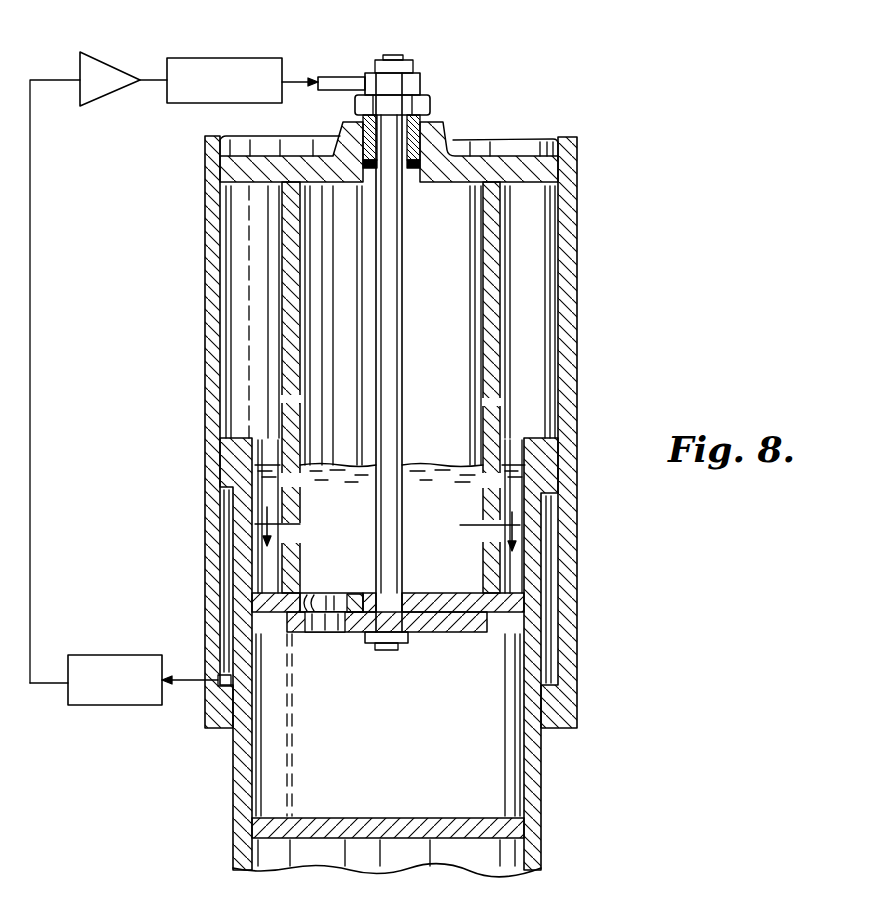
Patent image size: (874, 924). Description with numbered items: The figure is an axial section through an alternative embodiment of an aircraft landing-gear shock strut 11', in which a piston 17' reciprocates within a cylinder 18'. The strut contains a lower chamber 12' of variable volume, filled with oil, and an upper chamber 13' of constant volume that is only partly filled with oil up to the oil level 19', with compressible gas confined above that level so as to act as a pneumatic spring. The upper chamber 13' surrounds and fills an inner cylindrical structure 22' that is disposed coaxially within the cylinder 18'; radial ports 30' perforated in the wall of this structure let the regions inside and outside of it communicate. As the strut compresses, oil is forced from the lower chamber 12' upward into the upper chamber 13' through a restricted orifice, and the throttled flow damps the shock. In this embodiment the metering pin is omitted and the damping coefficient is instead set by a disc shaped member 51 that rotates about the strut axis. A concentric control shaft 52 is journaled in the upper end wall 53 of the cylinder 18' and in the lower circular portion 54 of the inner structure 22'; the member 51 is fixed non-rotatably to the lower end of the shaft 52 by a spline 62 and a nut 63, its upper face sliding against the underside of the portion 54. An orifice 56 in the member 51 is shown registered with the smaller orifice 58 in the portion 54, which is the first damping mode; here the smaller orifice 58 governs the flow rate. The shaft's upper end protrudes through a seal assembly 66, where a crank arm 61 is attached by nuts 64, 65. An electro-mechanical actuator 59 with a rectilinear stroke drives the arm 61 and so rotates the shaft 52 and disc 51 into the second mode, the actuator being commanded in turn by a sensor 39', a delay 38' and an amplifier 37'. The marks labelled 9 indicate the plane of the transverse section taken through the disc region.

The shock strut 11' is at (618, 240).
The lower chamber 12' is at (388, 725).
The upper chamber 13' is at (390, 389).
The piston 17' is at (365, 657).
The cylinder 18' is at (360, 432).
The oil level 19' is at (390, 452).
The inner cylindrical structure 22' is at (449, 387).
The radial ports 30' is at (399, 384).
The amplifier 37' is at (98, 353).
The delay 38' is at (96, 705).
The sensor 39' is at (193, 715).
The disc shaped member 51 is at (458, 632).
The control shaft 52 is at (402, 393).
The upper end wall 53 is at (462, 168).
The lower circular portion 54 is at (442, 594).
The orifice 56 is at (352, 633).
The orifice 58 is at (350, 596).
The electro-mechanical actuator 59 is at (226, 58).
The crank arm 61 is at (335, 78).
The spline 62 is at (419, 643).
The nut 63 is at (385, 650).
The nut 64 is at (398, 69).
The nut 65 is at (430, 108).
The seal assembly 66 is at (418, 143).
The section line 9- 9 is at (387, 518).